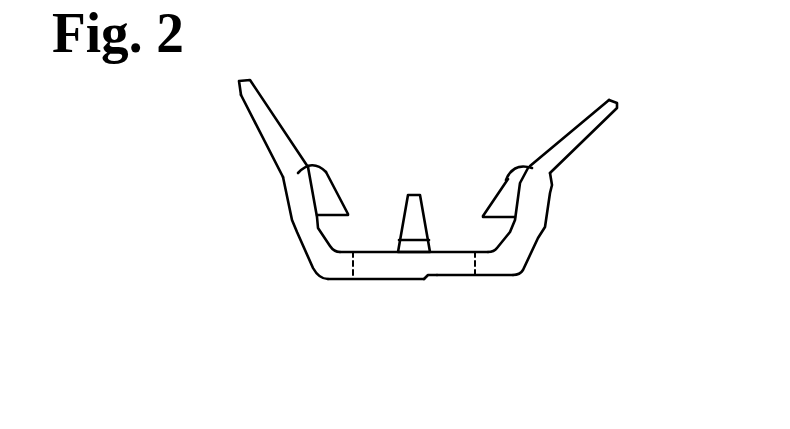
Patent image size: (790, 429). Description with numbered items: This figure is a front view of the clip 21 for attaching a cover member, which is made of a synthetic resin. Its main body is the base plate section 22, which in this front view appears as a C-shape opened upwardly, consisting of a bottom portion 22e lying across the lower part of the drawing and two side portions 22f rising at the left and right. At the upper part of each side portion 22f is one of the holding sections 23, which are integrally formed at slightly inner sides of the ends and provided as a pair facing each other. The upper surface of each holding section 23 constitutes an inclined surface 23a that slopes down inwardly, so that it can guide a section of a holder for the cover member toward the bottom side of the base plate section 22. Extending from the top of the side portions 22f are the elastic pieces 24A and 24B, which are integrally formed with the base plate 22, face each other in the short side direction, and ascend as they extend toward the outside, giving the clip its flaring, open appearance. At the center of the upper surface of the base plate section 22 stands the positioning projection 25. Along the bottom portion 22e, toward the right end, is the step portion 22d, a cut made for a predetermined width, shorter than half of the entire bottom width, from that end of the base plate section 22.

The clip 21 is at (413, 225).
The base plate section 22 is at (407, 311).
The step portion 22d is at (447, 276).
The bottom portion 22e is at (353, 283).
The side portions 22f is at (535, 236).
The holding sections 23 is at (351, 191).
The inclined surface 23a is at (301, 167).
The elastic piece 24A is at (258, 112).
The elastic piece 24B is at (587, 128).
The positioning projection 25 is at (414, 195).